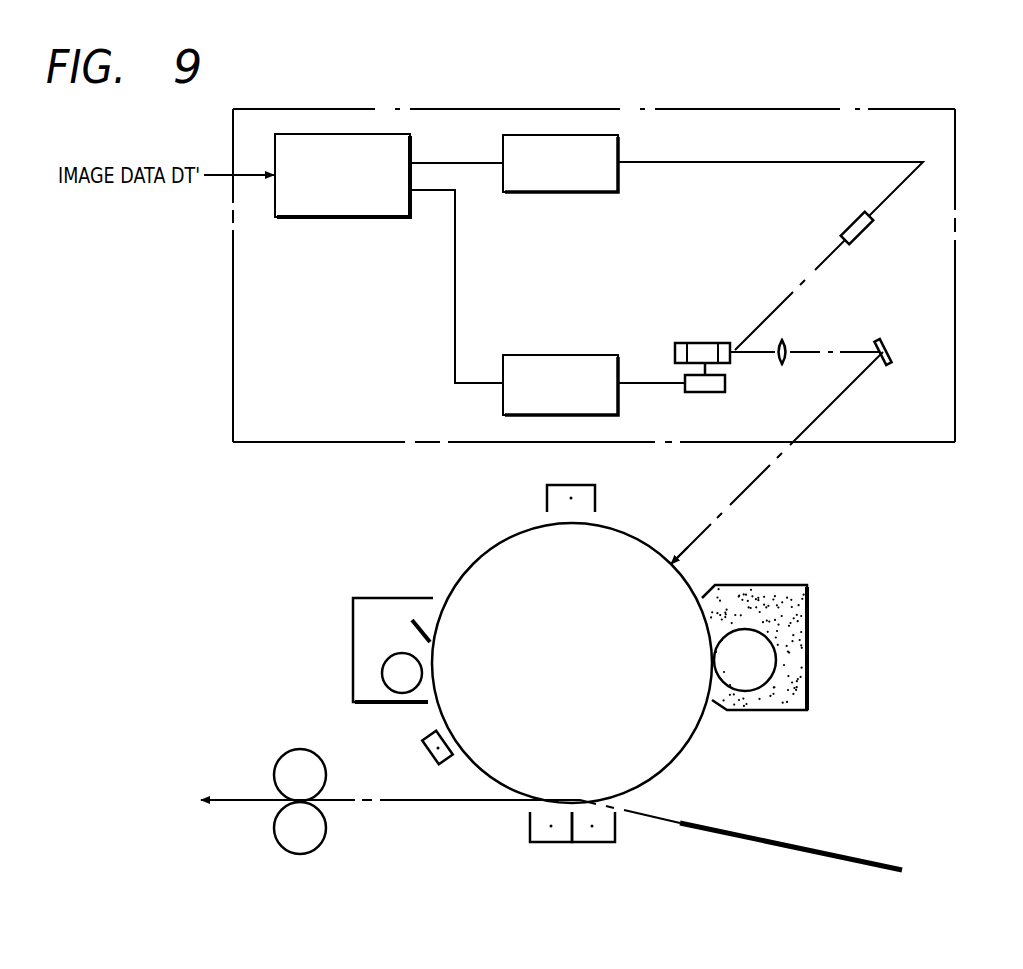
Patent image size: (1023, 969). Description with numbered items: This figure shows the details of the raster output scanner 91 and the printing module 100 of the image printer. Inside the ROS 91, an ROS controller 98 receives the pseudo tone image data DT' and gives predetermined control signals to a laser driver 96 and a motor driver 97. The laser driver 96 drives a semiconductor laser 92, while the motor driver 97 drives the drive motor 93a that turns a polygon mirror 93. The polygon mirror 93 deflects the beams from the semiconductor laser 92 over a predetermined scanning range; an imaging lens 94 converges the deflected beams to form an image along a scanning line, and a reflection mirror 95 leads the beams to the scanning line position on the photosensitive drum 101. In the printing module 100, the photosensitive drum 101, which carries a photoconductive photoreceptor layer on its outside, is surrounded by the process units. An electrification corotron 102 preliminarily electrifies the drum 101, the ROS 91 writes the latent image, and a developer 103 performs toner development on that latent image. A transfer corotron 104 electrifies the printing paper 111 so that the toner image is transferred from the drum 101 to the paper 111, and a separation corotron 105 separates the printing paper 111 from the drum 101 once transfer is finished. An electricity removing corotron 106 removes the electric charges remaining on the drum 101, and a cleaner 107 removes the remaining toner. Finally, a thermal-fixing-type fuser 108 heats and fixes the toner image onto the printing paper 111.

The raster output scanner 91 is at (711, 106).
The semiconductor laser 92 is at (848, 226).
The polygon mirror 93 is at (703, 343).
The drive motor 93a is at (703, 392).
The imaging lens 94 is at (786, 344).
The reflection mirror 95 is at (889, 340).
The laser driver 96 is at (568, 192).
The motor driver 97 is at (563, 355).
The ROS controller 98 is at (340, 217).
The printing module 100 is at (772, 557).
The photosensitive drum 101 is at (688, 575).
The electrification corotron 102 is at (595, 498).
The developer 103 is at (807, 630).
The transfer corotron 104 is at (597, 842).
The separation corotron 105 is at (553, 842).
The electricity removing corotron 106 is at (425, 750).
The cleaner 107 is at (390, 598).
The thermal-fixing-type fuser 108 is at (298, 748).
The printing paper 111 is at (792, 846).